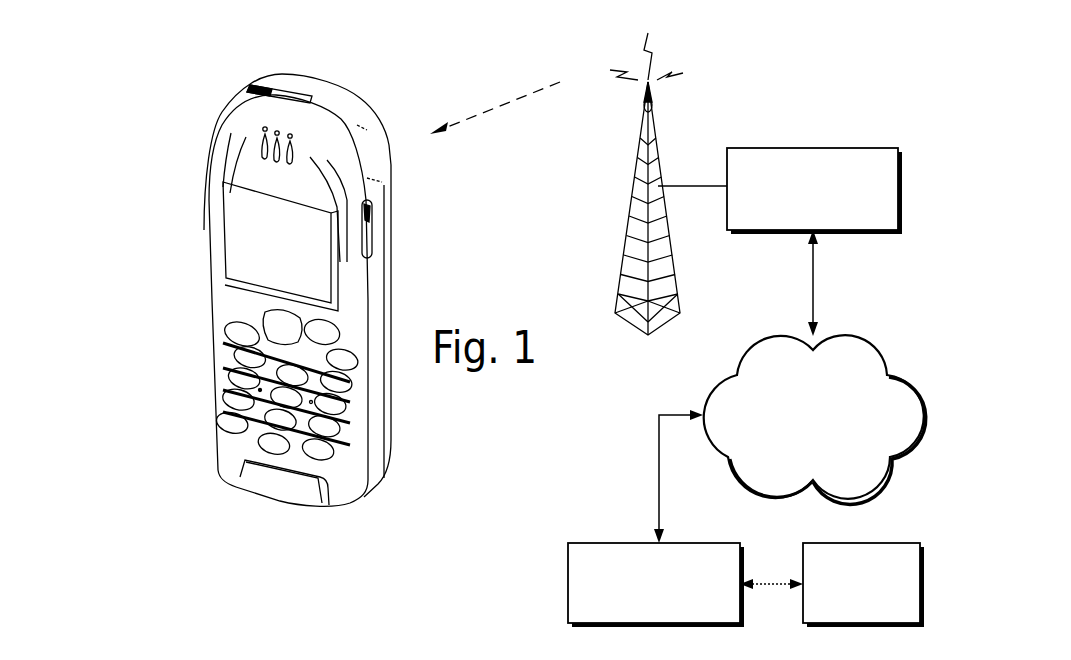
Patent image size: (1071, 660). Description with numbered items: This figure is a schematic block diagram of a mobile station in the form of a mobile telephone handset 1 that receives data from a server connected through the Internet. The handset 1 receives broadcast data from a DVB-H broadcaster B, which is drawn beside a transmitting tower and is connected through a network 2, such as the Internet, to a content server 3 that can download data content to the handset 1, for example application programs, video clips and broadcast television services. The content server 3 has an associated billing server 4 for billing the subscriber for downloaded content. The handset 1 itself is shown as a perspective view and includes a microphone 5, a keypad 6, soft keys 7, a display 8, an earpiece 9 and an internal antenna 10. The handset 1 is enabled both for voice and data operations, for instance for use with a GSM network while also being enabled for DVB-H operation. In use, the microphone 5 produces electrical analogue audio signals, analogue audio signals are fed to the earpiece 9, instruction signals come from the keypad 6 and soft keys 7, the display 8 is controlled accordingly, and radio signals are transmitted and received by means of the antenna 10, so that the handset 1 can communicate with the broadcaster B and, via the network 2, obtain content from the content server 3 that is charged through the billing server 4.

The mobile telephone handset 1 is at (378, 427).
The network 2 is at (815, 419).
The content server 3 is at (610, 542).
The billing server 4 is at (862, 542).
The microphone 5 is at (288, 492).
The keypad 6 is at (232, 384).
The soft keys 7 is at (228, 303).
The display 8 is at (243, 243).
The earpiece 9 is at (264, 130).
The internal antenna 10 is at (367, 140).
The DVB-H broadcaster B is at (765, 147).